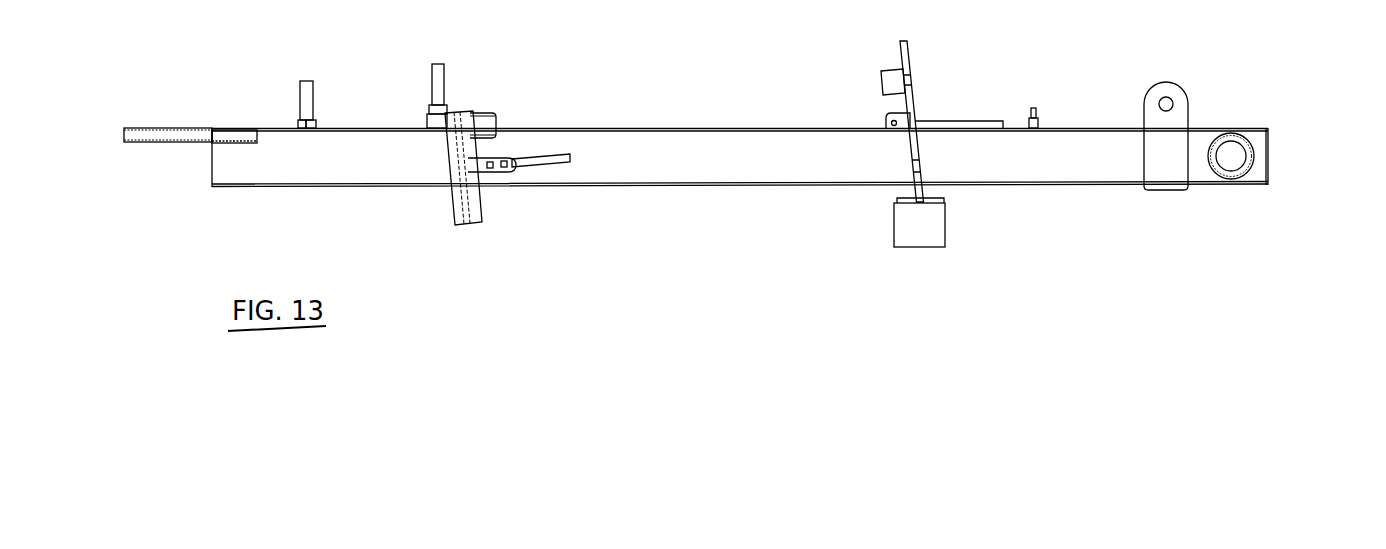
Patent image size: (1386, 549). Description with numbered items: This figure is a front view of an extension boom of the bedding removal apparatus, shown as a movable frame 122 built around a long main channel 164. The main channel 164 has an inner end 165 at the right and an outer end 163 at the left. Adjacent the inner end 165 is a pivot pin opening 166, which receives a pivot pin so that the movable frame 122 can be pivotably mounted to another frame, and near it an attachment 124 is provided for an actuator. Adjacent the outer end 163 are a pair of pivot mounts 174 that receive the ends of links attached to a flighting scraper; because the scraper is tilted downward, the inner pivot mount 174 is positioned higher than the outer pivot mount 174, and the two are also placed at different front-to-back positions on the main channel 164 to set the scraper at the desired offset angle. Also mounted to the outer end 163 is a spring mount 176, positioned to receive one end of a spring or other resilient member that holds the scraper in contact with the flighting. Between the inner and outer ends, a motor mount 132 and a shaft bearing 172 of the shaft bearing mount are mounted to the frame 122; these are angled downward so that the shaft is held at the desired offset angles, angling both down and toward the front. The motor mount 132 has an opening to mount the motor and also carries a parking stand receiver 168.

The movable frame 122 is at (769, 167).
The attachment 124 is at (1158, 88).
The motor mount 132 is at (920, 143).
The outer end 163 is at (212, 167).
The main channel 164 is at (817, 180).
The inner end 165 is at (1268, 168).
The pivot pin opening 166 is at (1230, 160).
The parking stand receiver 168 is at (922, 248).
The shaft bearing 172 is at (452, 212).
The pivot mount 174 is at (305, 82).
The spring mount 176 is at (175, 128).